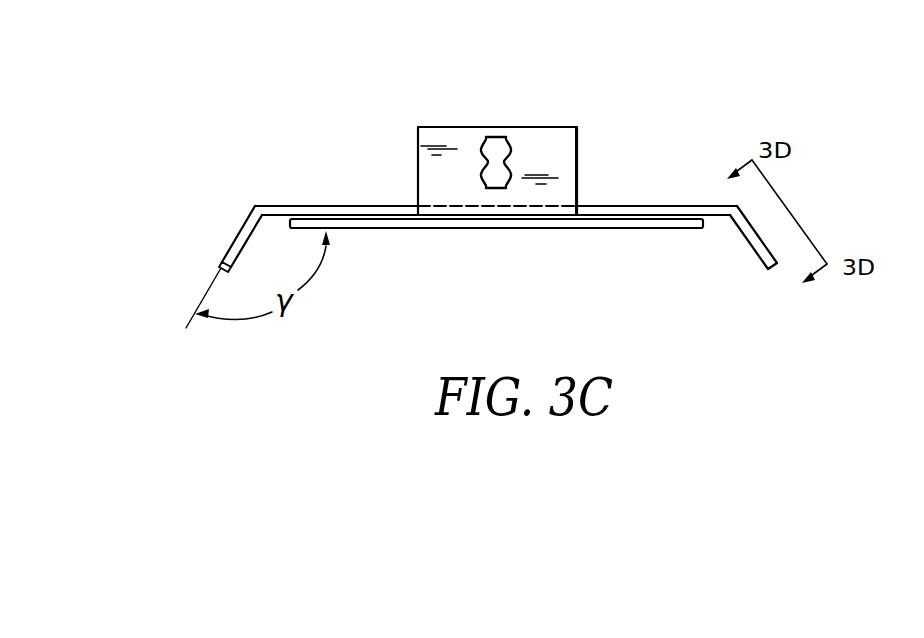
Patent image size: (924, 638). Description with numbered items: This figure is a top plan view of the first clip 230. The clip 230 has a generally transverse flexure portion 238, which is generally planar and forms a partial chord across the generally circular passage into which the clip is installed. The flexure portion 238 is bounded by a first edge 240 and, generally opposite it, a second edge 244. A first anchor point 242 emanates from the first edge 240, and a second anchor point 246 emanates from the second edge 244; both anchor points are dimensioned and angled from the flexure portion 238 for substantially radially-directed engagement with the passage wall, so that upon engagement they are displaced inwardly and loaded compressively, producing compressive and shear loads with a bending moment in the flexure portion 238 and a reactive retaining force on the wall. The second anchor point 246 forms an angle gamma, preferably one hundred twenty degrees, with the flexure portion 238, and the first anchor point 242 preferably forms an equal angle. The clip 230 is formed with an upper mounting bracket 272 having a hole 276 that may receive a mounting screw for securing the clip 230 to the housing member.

The first clip 230 is at (503, 260).
The transverse flexure portion 238 is at (638, 206).
The first edge 240 is at (731, 218).
The first anchor point 242 is at (760, 237).
The second edge 244 is at (257, 205).
The second anchor point 246 is at (233, 261).
The upper mounting bracket 272 is at (472, 127).
The hole 276 is at (505, 162).